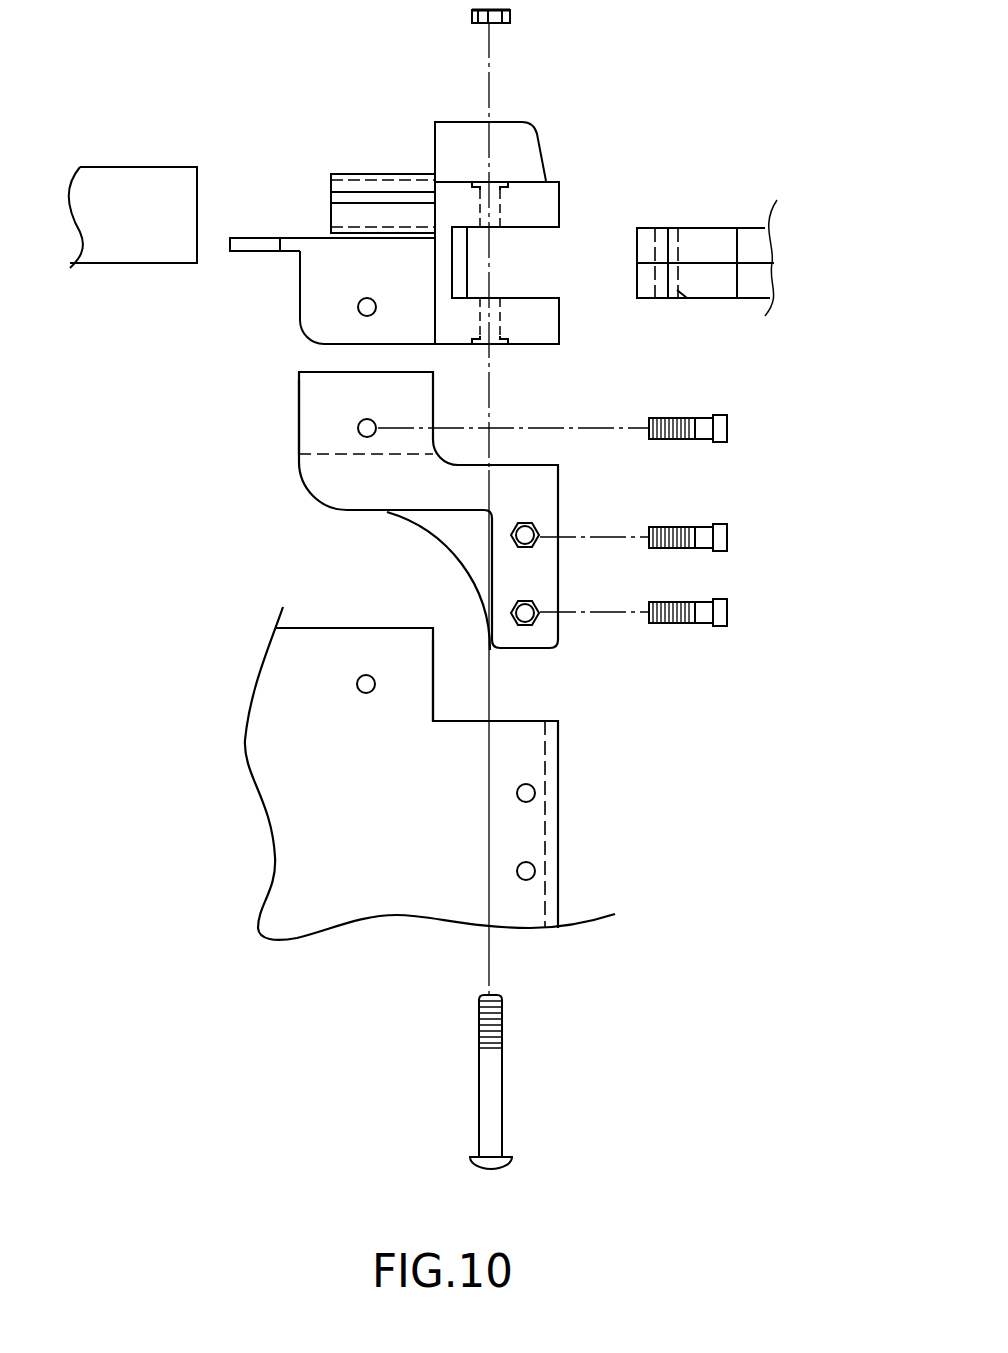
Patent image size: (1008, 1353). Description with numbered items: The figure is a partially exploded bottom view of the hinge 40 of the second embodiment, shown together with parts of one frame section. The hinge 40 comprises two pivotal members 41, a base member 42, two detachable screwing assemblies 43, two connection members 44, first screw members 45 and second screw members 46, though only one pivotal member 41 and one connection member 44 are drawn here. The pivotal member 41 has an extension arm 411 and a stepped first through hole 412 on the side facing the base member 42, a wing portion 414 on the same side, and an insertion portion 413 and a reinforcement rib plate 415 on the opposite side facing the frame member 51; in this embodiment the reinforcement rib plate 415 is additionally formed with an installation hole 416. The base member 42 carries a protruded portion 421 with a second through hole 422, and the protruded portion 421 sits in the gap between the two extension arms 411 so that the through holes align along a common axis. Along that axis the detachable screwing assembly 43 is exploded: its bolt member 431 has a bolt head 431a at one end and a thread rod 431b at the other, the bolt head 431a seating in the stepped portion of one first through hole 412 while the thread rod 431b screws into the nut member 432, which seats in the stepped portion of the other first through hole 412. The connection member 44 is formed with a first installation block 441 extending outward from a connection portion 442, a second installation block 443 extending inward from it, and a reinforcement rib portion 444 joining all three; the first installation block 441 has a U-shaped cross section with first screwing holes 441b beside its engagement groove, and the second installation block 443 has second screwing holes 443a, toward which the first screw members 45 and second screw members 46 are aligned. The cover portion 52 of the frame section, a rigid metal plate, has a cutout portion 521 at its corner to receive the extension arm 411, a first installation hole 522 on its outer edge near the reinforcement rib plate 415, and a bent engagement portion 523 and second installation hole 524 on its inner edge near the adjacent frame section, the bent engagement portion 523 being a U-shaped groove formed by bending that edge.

The hinge 40 is at (745, 112).
The pivotal member 41 is at (302, 345).
The extension arm 411 is at (548, 188).
The first through hole 412 is at (502, 214).
The insertion portion 413 is at (354, 172).
The wing portion 414 is at (448, 128).
The reinforcement rib plate 415 is at (302, 275).
The installation hole 416 is at (358, 307).
The base member 42 is at (718, 224).
The protruded portion 421 is at (640, 228).
The second through hole 422 is at (692, 310).
The detachable screwing assembly 43 is at (515, 1122).
The bolt member 431 is at (485, 1103).
The bolt head 431a is at (483, 1161).
The thread rod 431b is at (487, 1030).
The nut member 432 is at (510, 15).
The connection member 44 is at (297, 478).
The first installation block 441 is at (310, 435).
The first screwing hole 441b is at (358, 426).
The connection portion 442 is at (460, 490).
The second installation block 443 is at (541, 617).
The second screwing hole 443a is at (536, 620).
The reinforcement rib portion 444 is at (472, 560).
The first screw member 45 is at (727, 426).
The second screw member 46 is at (727, 535).
The frame member 51 is at (148, 178).
The cover portion 52 is at (265, 738).
The cutout portion 521 is at (437, 680).
The first installation hole 522 is at (358, 680).
The bent engagement portion 523 is at (532, 893).
The second installation hole 524 is at (535, 791).